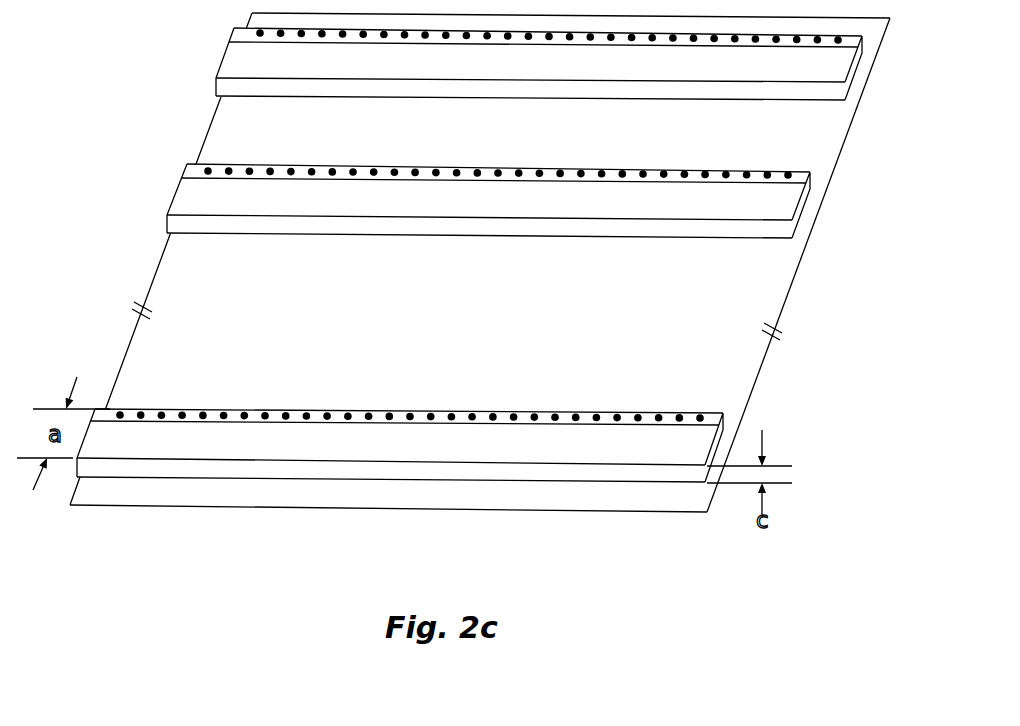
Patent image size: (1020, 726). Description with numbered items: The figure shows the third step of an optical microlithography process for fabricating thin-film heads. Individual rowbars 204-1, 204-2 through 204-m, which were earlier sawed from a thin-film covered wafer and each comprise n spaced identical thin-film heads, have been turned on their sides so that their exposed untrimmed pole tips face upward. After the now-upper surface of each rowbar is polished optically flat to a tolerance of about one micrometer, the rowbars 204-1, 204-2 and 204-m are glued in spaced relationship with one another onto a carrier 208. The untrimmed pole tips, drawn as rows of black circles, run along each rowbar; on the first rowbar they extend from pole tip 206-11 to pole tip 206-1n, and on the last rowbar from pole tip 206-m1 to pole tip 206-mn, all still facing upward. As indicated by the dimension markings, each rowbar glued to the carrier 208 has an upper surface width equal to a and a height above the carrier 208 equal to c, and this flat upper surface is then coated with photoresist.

The carrier 208 is at (842, 163).
The rowbar 204-1 is at (588, 92).
The rowbar 204-2 is at (522, 225).
The rowbar 204-m is at (470, 473).
The untrimmed pole tip 206-11 is at (261, 37).
The untrimmed pole tip 206-1n is at (838, 44).
The untrimmed pole tip 206-m1 is at (120, 419).
The untrimmed pole tip 206-mn is at (700, 422).